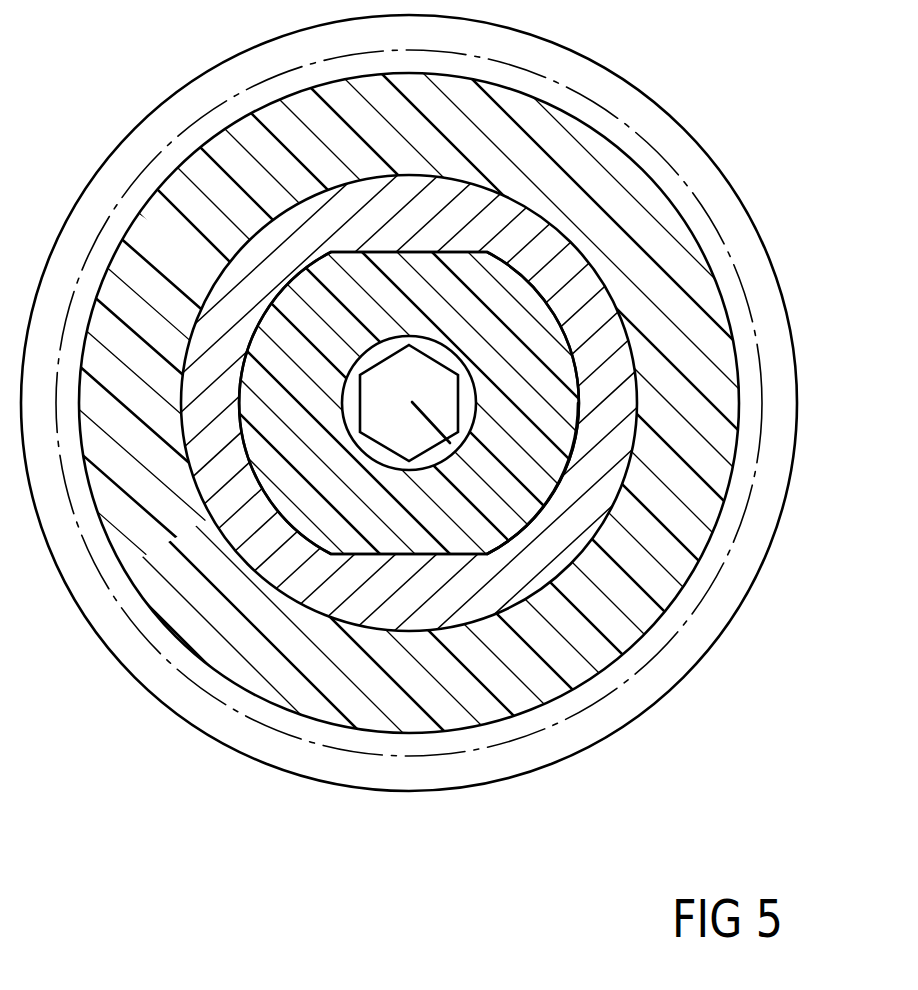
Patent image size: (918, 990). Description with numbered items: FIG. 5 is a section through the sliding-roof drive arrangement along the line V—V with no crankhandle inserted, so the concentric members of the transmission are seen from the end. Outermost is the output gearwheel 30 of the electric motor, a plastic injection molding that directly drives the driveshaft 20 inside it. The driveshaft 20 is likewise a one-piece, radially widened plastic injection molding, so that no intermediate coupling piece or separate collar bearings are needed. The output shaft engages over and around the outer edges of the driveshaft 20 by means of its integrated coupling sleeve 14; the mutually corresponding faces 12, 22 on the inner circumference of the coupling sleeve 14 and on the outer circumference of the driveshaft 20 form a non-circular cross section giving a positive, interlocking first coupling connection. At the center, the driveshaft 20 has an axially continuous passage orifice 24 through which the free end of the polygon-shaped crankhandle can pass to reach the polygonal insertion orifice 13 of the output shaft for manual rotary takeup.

The face 12 is at (392, 252).
The face 22 is at (486, 292).
The output gearwheel 30 is at (677, 350).
The coupling sleeve 14 is at (578, 298).
The driveshaft 20 is at (527, 460).
The insertion orifice 13 is at (520, 530).
The passage orifice 24 is at (470, 405).